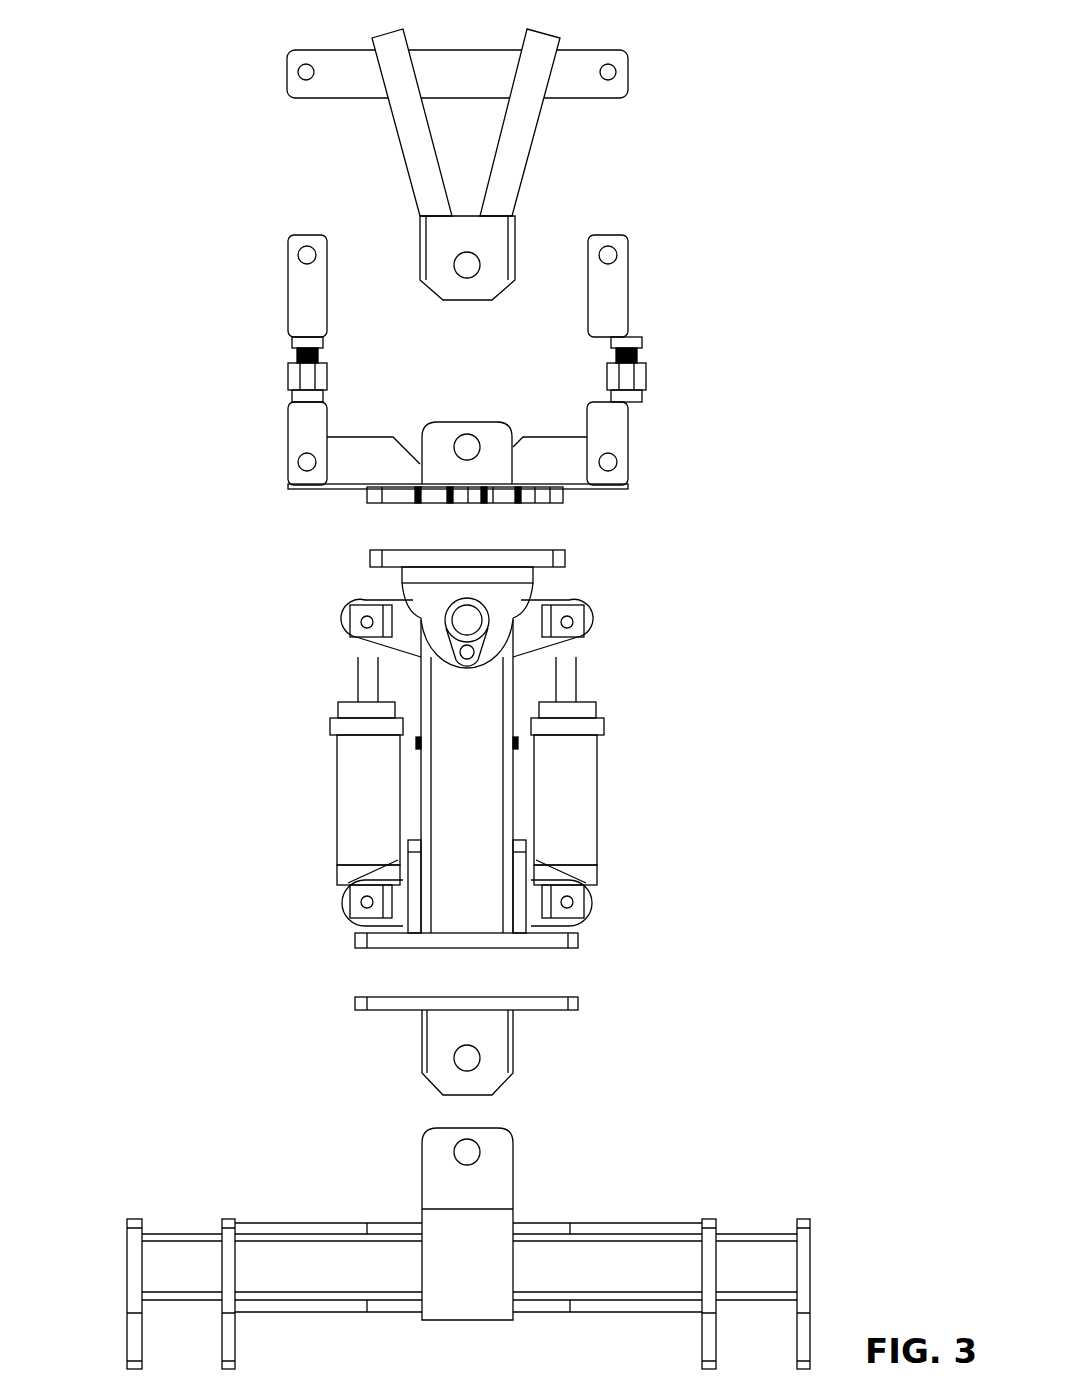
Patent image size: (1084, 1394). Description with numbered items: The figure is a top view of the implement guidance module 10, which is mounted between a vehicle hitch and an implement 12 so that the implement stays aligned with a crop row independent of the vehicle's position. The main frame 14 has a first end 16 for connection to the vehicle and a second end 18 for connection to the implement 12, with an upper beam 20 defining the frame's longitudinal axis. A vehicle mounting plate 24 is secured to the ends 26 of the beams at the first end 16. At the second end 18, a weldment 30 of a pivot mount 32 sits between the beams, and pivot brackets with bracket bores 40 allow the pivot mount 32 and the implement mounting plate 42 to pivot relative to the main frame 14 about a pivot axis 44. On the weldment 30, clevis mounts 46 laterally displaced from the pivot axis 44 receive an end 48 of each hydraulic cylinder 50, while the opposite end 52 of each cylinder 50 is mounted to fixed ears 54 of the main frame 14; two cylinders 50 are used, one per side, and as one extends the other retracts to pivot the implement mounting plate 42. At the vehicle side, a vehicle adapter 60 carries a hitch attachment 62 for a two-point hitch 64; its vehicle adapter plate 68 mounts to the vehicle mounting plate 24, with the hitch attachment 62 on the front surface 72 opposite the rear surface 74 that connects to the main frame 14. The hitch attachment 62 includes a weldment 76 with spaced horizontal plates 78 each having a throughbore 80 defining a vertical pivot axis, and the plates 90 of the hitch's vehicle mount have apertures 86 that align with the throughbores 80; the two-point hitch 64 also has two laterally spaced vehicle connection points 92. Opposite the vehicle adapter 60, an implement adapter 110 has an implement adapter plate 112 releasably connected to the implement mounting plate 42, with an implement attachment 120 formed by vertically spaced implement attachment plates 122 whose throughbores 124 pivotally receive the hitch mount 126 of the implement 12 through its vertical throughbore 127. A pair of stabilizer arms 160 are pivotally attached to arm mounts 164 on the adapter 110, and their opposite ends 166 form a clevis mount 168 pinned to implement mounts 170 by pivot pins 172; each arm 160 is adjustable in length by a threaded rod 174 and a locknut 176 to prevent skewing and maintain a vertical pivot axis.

The implement guidance module 10 is at (455, 747).
The implement 12 is at (395, 133).
The main frame 14 is at (488, 803).
The first end 16 is at (580, 945).
The second end 18 is at (565, 560).
The upper beam 20 is at (447, 700).
The vehicle mounting plate 24 is at (356, 940).
The ends 26 is at (452, 940).
The weldment 30 is at (567, 615).
The pivot mount 32 is at (415, 593).
The bracket bores 40 is at (467, 614).
The implement mounting plate 42 is at (370, 560).
The pivot axis 44 is at (466, 614).
The clevis mounts 46 is at (587, 623).
The end 48 is at (573, 663).
The cylinder 50 is at (386, 798).
The opposite end 52 is at (590, 896).
The ears 54 is at (388, 872).
The vehicle adapter 60 is at (473, 1164).
The hitch attachment 62 is at (421, 1050).
The two-point hitch 64 is at (668, 1222).
The vehicle adapter plate 68 is at (356, 1002).
The front surface 72 is at (528, 1012).
The rear surface 74 is at (525, 1000).
The weldment 76 is at (421, 1018).
The plates 78 is at (500, 1075).
The throughbore 80 is at (460, 1060).
The apertures 86 is at (465, 1152).
The plates 90 is at (510, 1173).
The vehicle connection points 92 is at (132, 1290).
The implement adapter 110 is at (458, 252).
The implement adapter plate 112 is at (555, 493).
The implement attachment 120 is at (515, 467).
The implement attachment plates 122 is at (442, 437).
The throughbore 124 is at (468, 438).
The hitch mount 126 is at (493, 234).
The vertical throughbore 127 is at (458, 262).
The stabilizer arms 160 is at (290, 450).
The arm mounts 164 is at (356, 440).
The opposite ends 166 is at (295, 305).
The clevis mount 168 is at (295, 250).
The implement mounts 170 is at (298, 89).
The pivot pins 172 is at (308, 68).
The threaded rod 174 is at (293, 355).
The locknut 176 is at (293, 385).